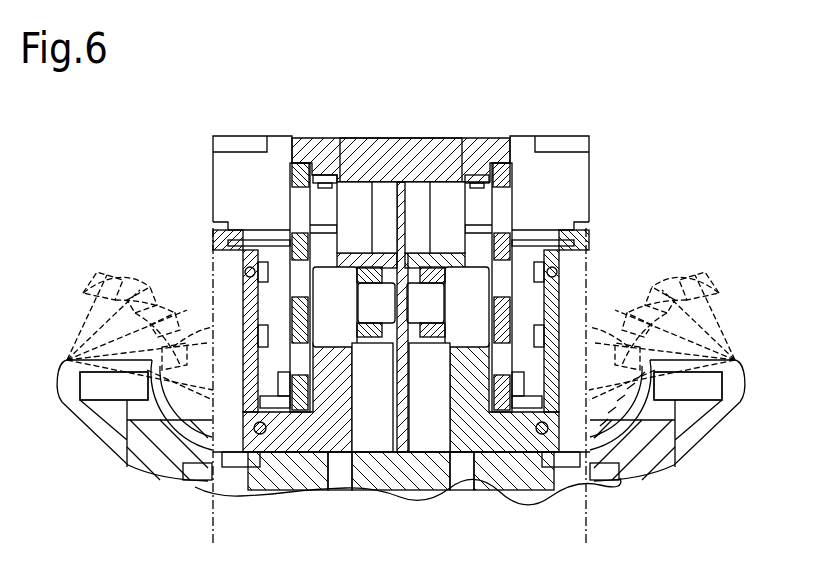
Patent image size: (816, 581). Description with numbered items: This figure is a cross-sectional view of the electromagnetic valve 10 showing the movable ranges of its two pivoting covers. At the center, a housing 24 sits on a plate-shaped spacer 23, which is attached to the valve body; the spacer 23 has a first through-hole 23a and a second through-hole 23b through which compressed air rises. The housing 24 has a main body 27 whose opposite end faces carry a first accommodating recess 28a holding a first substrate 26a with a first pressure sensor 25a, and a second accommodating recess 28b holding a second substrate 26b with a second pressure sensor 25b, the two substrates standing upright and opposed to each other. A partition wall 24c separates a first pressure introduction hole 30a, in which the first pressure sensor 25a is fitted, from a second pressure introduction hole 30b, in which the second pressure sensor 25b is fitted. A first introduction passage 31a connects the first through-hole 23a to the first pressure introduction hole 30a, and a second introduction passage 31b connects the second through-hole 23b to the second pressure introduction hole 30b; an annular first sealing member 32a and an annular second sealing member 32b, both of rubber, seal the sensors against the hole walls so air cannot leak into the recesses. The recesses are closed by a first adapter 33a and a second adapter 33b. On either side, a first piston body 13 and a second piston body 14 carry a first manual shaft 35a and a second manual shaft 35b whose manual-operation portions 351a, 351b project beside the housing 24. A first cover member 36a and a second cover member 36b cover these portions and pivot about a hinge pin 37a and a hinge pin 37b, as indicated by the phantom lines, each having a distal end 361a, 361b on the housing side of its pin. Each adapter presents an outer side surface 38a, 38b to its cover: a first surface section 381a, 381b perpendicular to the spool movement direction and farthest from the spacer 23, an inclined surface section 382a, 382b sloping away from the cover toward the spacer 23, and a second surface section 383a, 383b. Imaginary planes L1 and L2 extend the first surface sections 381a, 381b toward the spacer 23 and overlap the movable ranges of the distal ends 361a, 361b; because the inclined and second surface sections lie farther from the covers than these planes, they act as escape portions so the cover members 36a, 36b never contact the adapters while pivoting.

The electromagnetic valve 10 is at (71, 138).
The first piston body 13 is at (650, 470).
The second piston body 14 is at (162, 455).
The spacer 23 is at (410, 485).
The first through-hole 23a is at (455, 480).
The second through-hole 23b is at (342, 480).
The housing 24 is at (352, 138).
The partition wall 24c is at (366, 480).
The first pressure sensor 25a is at (498, 252).
The second pressure sensor 25b is at (300, 252).
The first substrate 26a is at (512, 222).
The second substrate 26b is at (292, 222).
The main body 27 is at (463, 152).
The first accommodating recess 28a is at (489, 180).
The second accommodating recess 28b is at (313, 180).
The first pressure introduction hole 30a is at (448, 262).
The second pressure introduction hole 30b is at (348, 262).
The first introduction passage 31a is at (490, 470).
The second introduction passage 31b is at (318, 468).
The first sealing member 32a is at (434, 362).
The second sealing member 32b is at (366, 362).
The first adapter 33a is at (590, 140).
The second adapter 33b is at (212, 137).
The first manual shaft 35a is at (673, 438).
The second manual shaft 35b is at (134, 437).
The manual-operation portion 351a is at (716, 437).
The manual-operation portion 351b is at (86, 437).
The first cover member 36a is at (724, 305).
The second cover member 36b is at (78, 297).
The distal end 361a is at (594, 465).
The distal end 361b is at (203, 470).
The hinge pin 37a is at (722, 362).
The hinge pin 37b is at (77, 362).
The outer side surface 38a is at (694, 175).
The outer side surface 38b is at (108, 173).
The first surface section 381a is at (590, 232).
The first surface section 381b is at (213, 232).
The inclined surface section 382a is at (590, 262).
The inclined surface section 382b is at (213, 262).
The second surface section 383a is at (553, 300).
The second surface section 383b is at (250, 300).
The imaginary plane L1 is at (558, 470).
The imaginary plane L2 is at (234, 480).